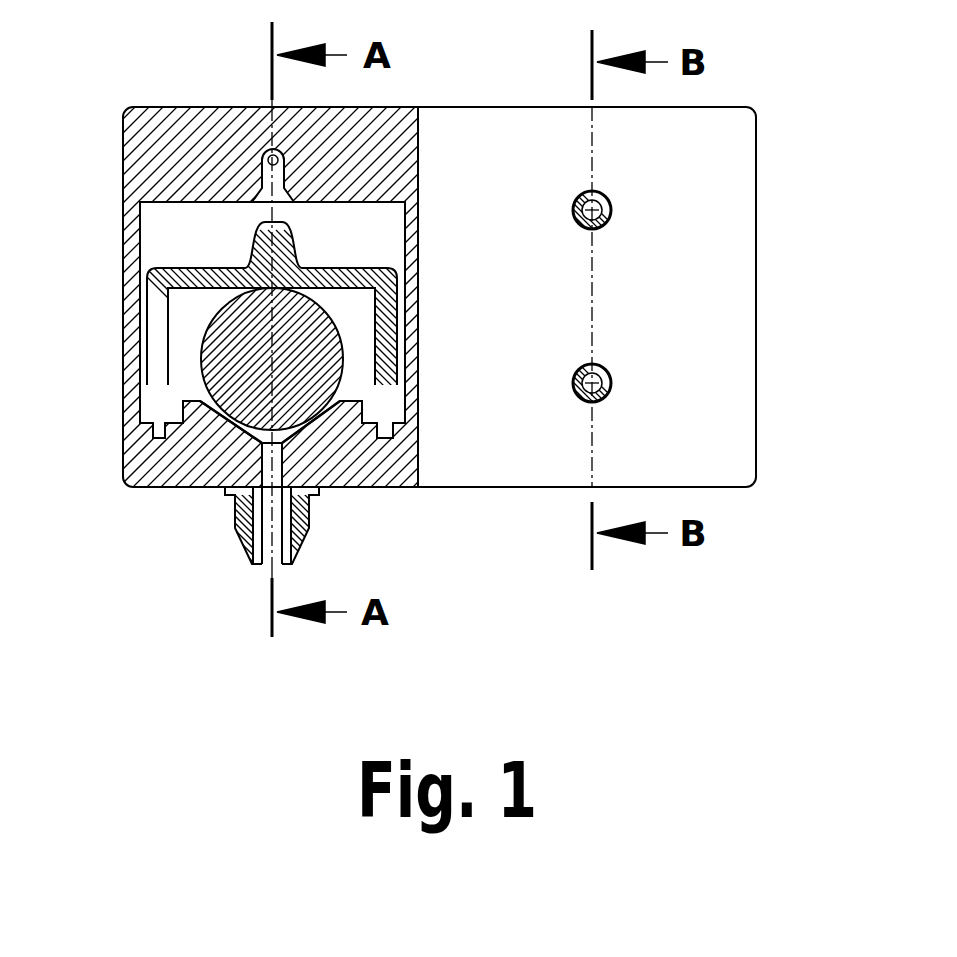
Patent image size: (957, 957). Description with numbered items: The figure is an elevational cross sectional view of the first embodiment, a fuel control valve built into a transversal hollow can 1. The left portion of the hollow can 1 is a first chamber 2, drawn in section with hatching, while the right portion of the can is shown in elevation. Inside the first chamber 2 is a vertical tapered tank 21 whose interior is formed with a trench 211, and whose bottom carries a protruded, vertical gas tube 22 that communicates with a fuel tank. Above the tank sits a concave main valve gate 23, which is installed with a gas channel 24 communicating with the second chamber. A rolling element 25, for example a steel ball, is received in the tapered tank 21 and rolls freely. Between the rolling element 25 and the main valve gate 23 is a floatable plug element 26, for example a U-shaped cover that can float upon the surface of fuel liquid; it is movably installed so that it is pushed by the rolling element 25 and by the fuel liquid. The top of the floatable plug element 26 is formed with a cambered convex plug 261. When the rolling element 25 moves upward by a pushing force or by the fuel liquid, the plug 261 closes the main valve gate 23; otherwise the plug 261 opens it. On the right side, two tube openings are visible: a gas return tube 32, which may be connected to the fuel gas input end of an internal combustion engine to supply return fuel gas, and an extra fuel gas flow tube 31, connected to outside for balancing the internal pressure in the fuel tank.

The transversal hollow can 1 is at (737, 103).
The first chamber 2 is at (170, 233).
The tapered tank 21 is at (237, 465).
The trench 211 is at (292, 441).
The gas tube 22 is at (253, 553).
The main valve gate 23 is at (257, 187).
The gas channel 24 is at (266, 152).
The rolling element 25 is at (208, 350).
The floatable plug element 26 is at (153, 273).
The plug 261 is at (253, 247).
The fuel gas flow tube 31 is at (612, 383).
The gas return tube 32 is at (612, 210).